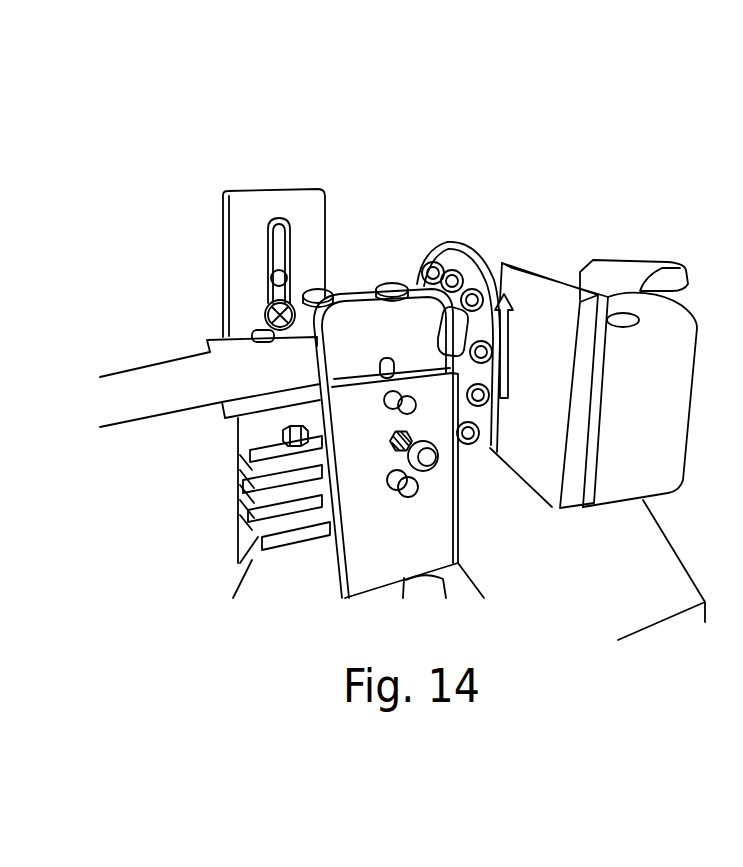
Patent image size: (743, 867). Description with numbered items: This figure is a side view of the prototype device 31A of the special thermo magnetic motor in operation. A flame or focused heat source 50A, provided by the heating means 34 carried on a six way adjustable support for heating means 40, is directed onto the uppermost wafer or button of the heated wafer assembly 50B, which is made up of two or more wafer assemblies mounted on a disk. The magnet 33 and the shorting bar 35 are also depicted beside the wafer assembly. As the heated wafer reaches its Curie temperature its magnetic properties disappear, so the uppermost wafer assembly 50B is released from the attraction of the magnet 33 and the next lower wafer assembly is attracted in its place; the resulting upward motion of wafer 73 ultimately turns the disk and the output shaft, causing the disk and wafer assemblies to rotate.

The prototype of a special thermo magnetic motor device 31A is at (194, 610).
The magnet 33 is at (623, 458).
The heating means 34 is at (157, 376).
The shorting bar 35 is at (705, 622).
The six way adjustable support for heating means 40 is at (372, 540).
The flame or focused heat source 50A is at (452, 330).
The heated wafer assembly 50B is at (472, 322).
The upward motion of wafer 73 is at (500, 343).